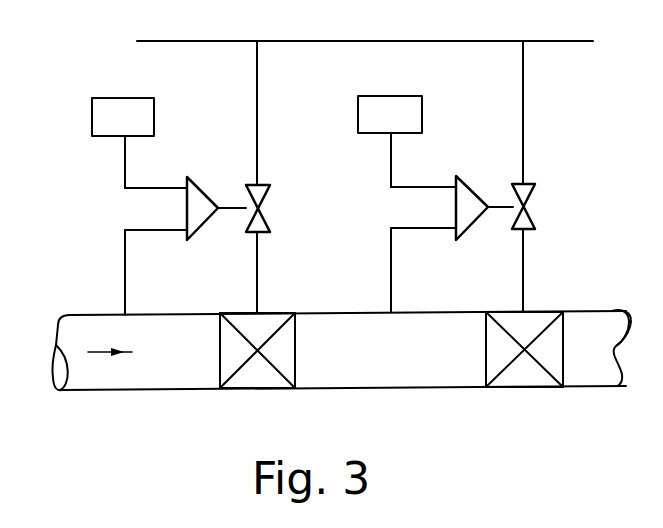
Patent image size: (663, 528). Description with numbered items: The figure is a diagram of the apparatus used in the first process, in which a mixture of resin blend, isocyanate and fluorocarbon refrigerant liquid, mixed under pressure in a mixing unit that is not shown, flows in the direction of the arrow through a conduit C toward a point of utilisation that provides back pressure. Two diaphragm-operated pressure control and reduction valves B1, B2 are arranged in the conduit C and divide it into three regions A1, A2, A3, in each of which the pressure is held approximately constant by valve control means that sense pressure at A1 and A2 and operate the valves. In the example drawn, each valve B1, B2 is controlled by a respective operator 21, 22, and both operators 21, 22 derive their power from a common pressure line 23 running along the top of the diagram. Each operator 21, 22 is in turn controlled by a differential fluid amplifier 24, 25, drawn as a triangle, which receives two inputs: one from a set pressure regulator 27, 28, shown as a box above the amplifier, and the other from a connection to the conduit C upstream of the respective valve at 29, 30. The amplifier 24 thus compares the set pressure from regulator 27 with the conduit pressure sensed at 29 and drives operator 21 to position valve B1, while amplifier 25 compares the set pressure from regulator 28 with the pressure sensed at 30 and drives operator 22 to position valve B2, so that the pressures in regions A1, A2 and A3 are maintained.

The operator 21 is at (262, 221).
The operator 22 is at (535, 222).
The pressure line 23 is at (563, 41).
The differential fluid amplifier 24 is at (192, 212).
The differential fluid amplifier 25 is at (464, 212).
The set pressure regulator 27 is at (115, 107).
The set pressure regulator 28 is at (381, 100).
The connection to the conduit 29 is at (120, 314).
The connection to the conduit 30 is at (394, 309).
The region A1 is at (137, 352).
The region A2 is at (387, 351).
The region A3 is at (587, 351).
The diaphragm-operated pressure control and reduction valve B1 is at (255, 379).
The diaphragm-operated pressure control and reduction valve B2 is at (525, 379).
The conduit C is at (87, 379).